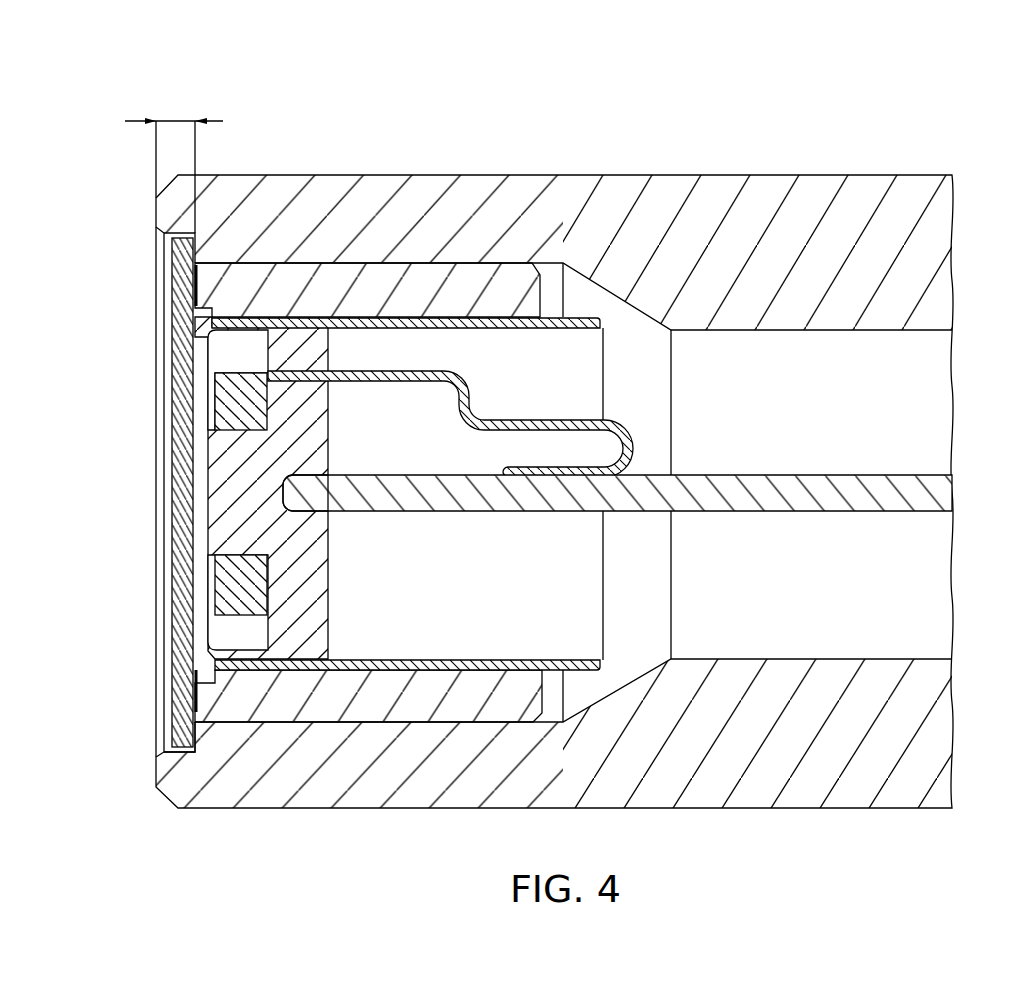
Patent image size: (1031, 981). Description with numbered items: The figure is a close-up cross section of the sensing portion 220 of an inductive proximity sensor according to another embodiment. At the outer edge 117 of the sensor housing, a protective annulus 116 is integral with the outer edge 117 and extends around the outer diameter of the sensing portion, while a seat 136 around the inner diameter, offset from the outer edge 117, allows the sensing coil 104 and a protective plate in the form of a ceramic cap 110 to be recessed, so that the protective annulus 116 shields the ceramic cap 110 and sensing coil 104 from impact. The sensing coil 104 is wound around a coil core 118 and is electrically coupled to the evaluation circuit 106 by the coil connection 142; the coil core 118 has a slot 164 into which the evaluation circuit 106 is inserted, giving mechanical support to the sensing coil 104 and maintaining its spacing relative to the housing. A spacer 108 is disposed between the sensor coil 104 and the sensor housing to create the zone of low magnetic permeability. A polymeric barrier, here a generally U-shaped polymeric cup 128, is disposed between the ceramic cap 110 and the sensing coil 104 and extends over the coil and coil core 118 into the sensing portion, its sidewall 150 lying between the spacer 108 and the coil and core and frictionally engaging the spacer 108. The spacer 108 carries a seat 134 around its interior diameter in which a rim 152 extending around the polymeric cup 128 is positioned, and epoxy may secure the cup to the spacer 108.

The sensing coil 104 is at (215, 583).
The evaluation circuit 106 is at (810, 511).
The spacer 108 is at (200, 287).
The ceramic cap 110 is at (181, 329).
The protective annulus 116 is at (168, 120).
The outer edge 117 is at (146, 773).
The coil core 118 is at (207, 482).
The polymeric cup 128 is at (202, 405).
The seat 134 is at (222, 673).
The seat 136 is at (197, 752).
The coil connection 142 is at (468, 406).
The sidewall 150 is at (366, 330).
The rim 152 is at (207, 670).
The slot 164 is at (330, 511).
The sensing portion 220 is at (921, 136).